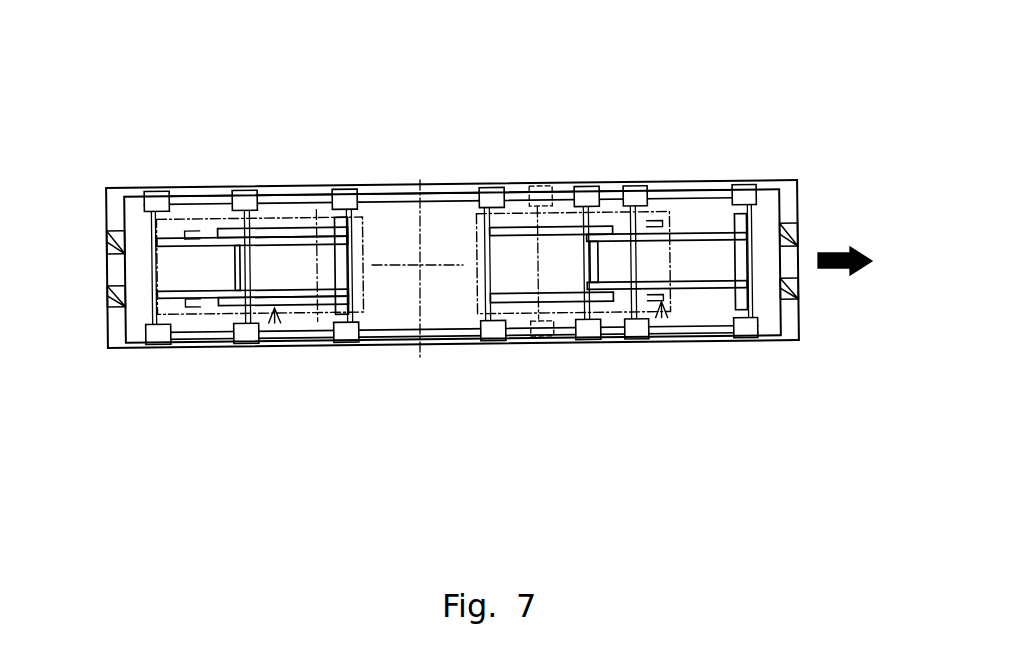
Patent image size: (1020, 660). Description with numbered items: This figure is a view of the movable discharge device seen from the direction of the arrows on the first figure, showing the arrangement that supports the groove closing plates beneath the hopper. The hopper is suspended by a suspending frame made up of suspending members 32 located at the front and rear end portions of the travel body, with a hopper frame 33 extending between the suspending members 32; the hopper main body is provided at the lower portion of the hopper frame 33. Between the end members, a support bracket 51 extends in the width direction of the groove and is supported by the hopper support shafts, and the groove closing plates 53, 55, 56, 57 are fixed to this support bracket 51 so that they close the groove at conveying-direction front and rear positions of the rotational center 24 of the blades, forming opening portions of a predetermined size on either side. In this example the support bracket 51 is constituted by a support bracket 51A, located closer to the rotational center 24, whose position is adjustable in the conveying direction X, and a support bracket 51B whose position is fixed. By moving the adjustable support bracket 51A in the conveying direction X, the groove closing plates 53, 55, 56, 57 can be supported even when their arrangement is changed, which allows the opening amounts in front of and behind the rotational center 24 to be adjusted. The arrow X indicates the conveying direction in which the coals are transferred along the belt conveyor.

The rotational center 24 is at (420, 265).
The suspending member 32 is at (105, 197).
The hopper frame 33 is at (767, 337).
The support bracket 51 is at (448, 169).
The support bracket 51A is at (288, 236).
The support bracket 51B is at (298, 92).
The groove closing plate 53 is at (450, 354).
The groove closing plate 55 is at (450, 354).
The groove closing plate 56 is at (450, 354).
The groove closing plate 57 is at (272, 330).
The conveying direction X is at (837, 268).